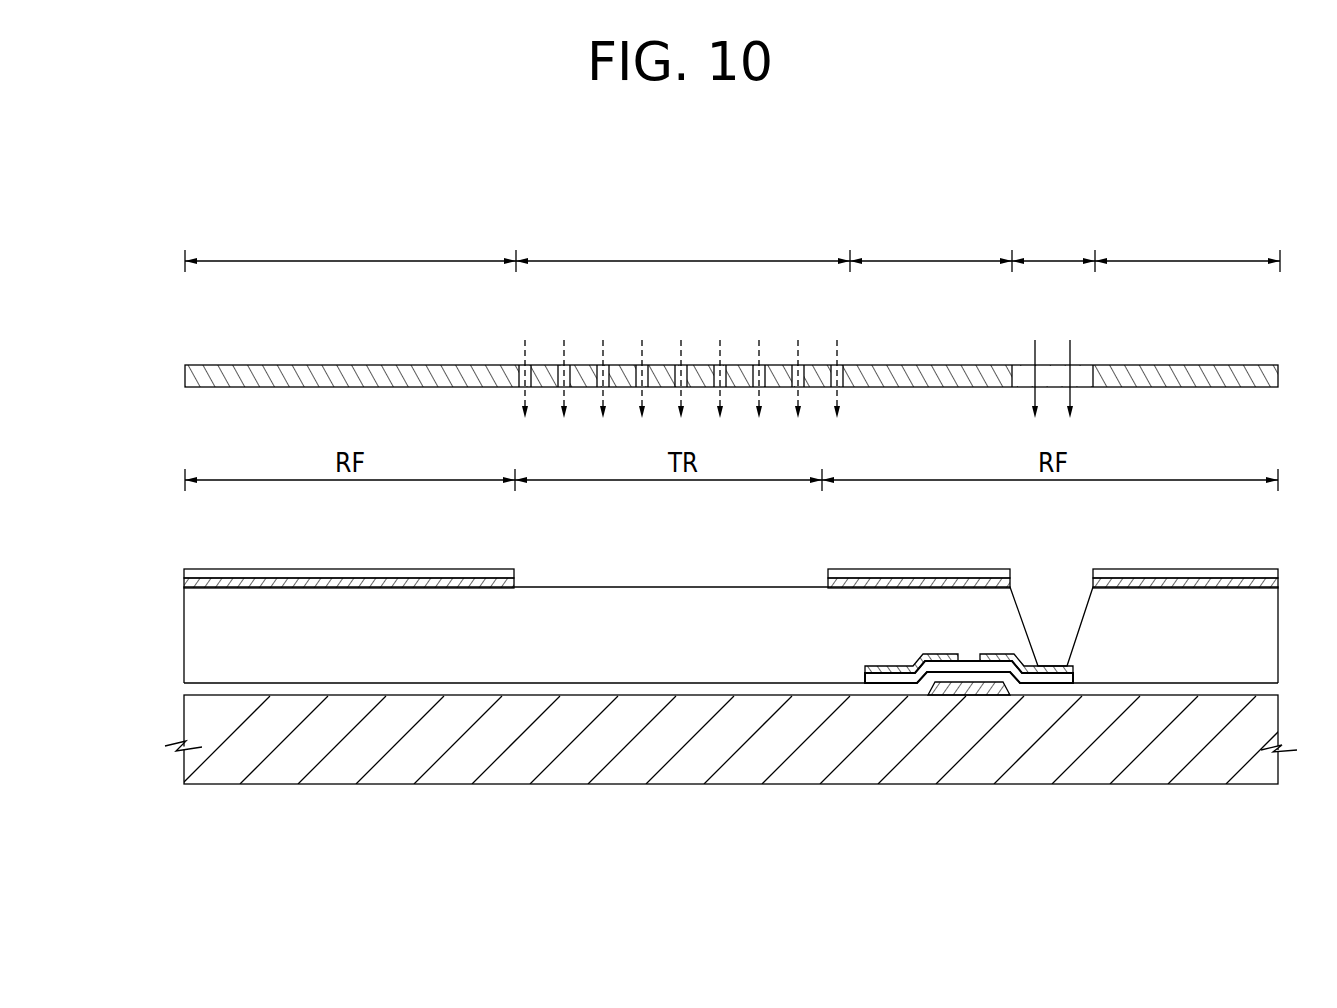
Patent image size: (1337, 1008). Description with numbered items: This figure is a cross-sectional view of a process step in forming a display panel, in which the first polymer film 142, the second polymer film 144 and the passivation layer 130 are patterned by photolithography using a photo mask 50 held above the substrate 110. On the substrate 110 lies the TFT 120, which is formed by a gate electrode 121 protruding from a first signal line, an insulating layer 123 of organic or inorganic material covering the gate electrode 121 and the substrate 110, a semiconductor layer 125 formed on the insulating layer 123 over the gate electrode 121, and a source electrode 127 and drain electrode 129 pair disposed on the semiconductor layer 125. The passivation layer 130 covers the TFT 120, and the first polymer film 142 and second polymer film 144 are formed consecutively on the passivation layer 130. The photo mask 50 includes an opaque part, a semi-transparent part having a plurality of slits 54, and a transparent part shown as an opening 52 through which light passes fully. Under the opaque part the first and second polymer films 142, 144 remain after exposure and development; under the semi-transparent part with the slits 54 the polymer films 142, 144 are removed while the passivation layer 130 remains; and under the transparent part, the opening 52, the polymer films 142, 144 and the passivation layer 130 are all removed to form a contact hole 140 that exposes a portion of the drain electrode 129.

The photo mask 50 is at (185, 372).
The opening of mask 52 is at (1080, 366).
The slits 54 is at (843, 365).
The substrate 110 is at (196, 725).
The TFT 120 is at (731, 775).
The gate electrode 121 is at (952, 690).
The insulating layer 123 is at (1123, 690).
The semiconductor layer 125 is at (1025, 680).
The source electrode 127 is at (887, 672).
The drain electrode 129 is at (1031, 749).
The passivation layer 130 is at (196, 641).
The contact hole 140 is at (1055, 590).
The first polymer film 142 is at (184, 583).
The second polymer film 144 is at (184, 572).